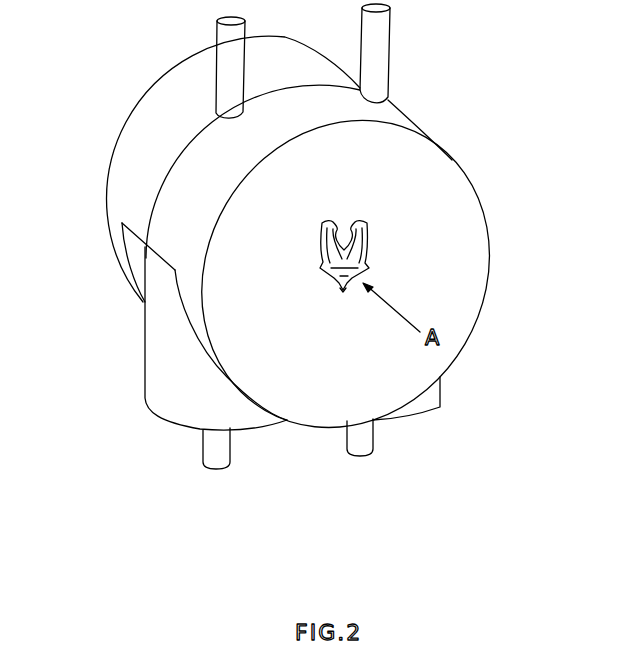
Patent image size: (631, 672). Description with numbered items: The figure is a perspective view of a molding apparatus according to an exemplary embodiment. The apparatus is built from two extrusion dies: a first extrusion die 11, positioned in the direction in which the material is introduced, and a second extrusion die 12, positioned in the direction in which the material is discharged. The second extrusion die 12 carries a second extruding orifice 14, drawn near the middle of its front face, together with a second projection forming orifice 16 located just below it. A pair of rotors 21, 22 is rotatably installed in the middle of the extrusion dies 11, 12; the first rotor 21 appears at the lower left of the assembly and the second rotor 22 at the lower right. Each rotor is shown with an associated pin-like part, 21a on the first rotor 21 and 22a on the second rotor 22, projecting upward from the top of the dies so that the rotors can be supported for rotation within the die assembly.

The first extrusion die 11 is at (130, 130).
The second extrusion die 12 is at (477, 250).
The second extruding orifice 14 is at (367, 232).
The second projection forming orifice 16 is at (340, 292).
The rotor 21 is at (153, 369).
The first fixing pin 21a is at (228, 33).
The rotor 22 is at (440, 395).
The second fixing pin 22a is at (378, 37).